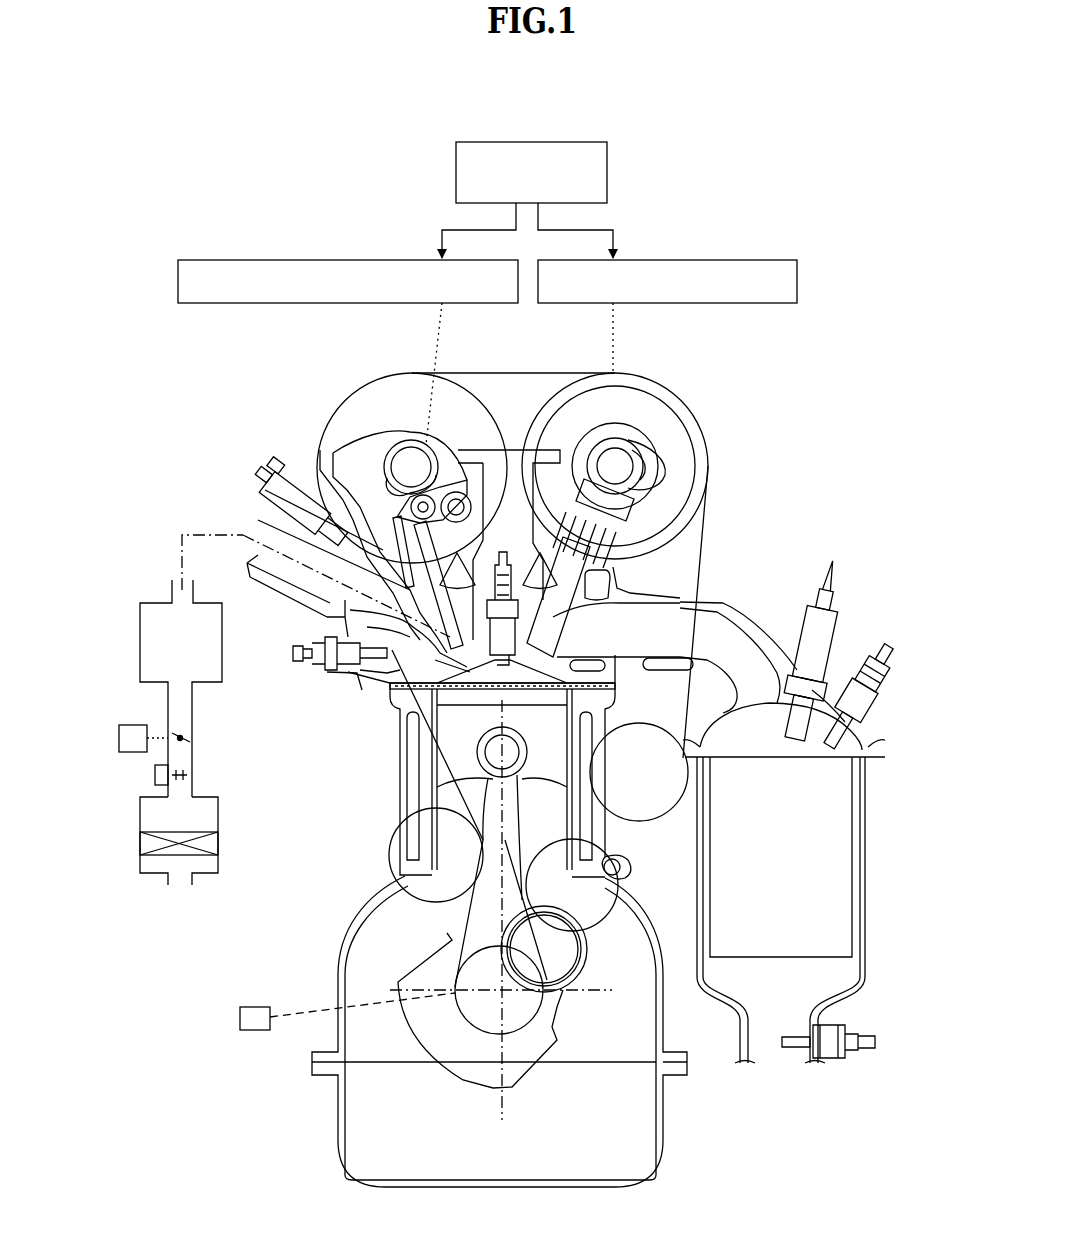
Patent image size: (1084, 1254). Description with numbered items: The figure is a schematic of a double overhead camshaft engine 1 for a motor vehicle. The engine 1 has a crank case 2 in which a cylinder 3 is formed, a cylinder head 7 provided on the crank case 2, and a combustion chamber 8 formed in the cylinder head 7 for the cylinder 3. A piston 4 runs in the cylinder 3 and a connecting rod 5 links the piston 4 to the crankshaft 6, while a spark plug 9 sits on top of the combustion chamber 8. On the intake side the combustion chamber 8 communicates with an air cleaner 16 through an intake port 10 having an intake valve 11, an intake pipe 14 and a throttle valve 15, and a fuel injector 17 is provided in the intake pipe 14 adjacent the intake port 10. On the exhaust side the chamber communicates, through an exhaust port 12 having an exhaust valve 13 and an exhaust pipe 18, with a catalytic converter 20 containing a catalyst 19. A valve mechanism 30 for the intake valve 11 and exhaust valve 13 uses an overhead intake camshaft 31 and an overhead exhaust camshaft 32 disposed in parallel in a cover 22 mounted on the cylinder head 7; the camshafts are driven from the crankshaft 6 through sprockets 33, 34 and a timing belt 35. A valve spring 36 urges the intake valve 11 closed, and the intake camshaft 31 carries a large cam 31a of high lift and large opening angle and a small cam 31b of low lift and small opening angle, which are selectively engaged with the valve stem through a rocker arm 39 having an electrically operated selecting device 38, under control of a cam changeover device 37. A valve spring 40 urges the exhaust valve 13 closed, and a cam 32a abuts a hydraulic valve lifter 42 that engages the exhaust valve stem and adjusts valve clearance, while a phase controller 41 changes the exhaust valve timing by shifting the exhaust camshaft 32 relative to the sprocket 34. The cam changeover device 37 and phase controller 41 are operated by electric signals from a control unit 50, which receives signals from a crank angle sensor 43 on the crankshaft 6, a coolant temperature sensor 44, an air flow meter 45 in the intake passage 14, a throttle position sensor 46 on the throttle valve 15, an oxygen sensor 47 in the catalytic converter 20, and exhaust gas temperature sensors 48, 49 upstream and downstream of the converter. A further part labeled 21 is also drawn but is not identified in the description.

The engine 1 is at (680, 1120).
The crank case 2 is at (342, 966).
The cylinder 3 is at (430, 820).
The piston 4 is at (450, 752).
The connecting rod 5 is at (530, 805).
The crankshaft 6 is at (575, 950).
The cylinder head 7 is at (615, 670).
The combustion chamber 8 is at (525, 675).
The spark plug 9 is at (520, 598).
The intake port 10 is at (423, 627).
The intake valve 11 is at (345, 610).
The exhaust port 12 is at (625, 615).
The exhaust valve 13 is at (567, 618).
The intake pipe 14 is at (200, 535).
The throttle valve 15 is at (190, 738).
The air cleaner 16 is at (218, 815).
The fuel injector 17 is at (262, 476).
The exhaust pipe 18 is at (740, 625).
The catalyst 19 is at (790, 870).
The catalytic converter 20 is at (865, 873).
The cam carrier 21 is at (505, 450).
The cover 22 is at (358, 690).
The valve mechanism 30 is at (735, 464).
The intake camshaft 31 is at (408, 475).
The large cam 31a is at (393, 462).
The small cam 31b is at (395, 455).
The exhaust camshaft 32 is at (622, 460).
The exhaust cam 32a is at (640, 455).
The sprocket 33 is at (390, 373).
The sprocket 34 is at (633, 373).
The timing belt 35 is at (500, 373).
The valve spring 36 is at (440, 555).
The cam changeover device 37 is at (297, 258).
The electrically operated selecting device 38 is at (462, 488).
The rocker arm 39 is at (470, 528).
The valve spring 40 is at (606, 536).
The phase controller 41 is at (727, 258).
The hydraulic valve lifter 42 is at (612, 507).
The crank angle sensor 43 is at (255, 1007).
The coolant temperature sensor 44 is at (300, 662).
The air flow meter 45 is at (155, 778).
The throttle position sensor 46 is at (135, 730).
The oxygen sensor 47 is at (826, 640).
The exhaust gas temperature sensor 48 is at (887, 665).
The exhaust gas temperature sensor 49 is at (866, 1040).
The control unit 50 is at (607, 180).